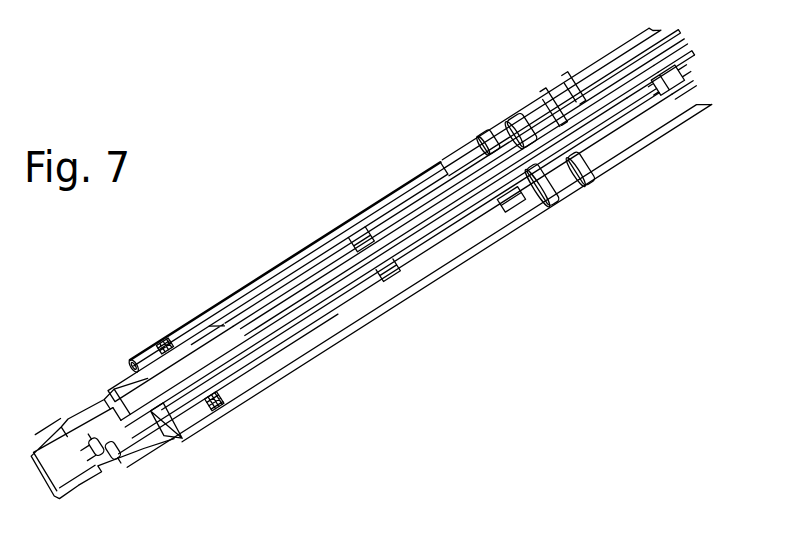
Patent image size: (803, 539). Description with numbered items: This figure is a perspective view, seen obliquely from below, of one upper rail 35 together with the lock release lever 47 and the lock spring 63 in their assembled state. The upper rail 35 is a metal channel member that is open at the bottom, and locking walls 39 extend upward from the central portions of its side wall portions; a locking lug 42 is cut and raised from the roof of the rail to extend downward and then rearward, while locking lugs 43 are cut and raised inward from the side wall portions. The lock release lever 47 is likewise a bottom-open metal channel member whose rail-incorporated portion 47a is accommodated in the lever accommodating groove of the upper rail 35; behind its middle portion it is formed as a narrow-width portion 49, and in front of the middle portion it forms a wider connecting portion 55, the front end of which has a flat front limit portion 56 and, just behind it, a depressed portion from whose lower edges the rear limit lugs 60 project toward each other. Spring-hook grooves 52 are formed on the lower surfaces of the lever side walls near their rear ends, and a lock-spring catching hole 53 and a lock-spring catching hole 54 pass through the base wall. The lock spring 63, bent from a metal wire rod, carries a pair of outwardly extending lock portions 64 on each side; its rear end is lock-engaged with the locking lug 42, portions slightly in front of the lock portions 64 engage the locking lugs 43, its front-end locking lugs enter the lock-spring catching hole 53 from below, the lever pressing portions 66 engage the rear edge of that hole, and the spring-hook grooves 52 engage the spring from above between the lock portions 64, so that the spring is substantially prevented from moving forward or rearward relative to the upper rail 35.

The upper rail 35 is at (322, 236).
The rail-incorporated portion 47a is at (440, 84).
The lock release lever 47 is at (212, 338).
The lever pressing portions 66 is at (277, 300).
The narrow-width portion 49 is at (448, 223).
The lock-spring catching hole 53 is at (240, 365).
The locking lugs 43 is at (363, 241).
The lock portions 64 is at (518, 105).
The spring-hook grooves 52 is at (510, 198).
The locking lug 42 is at (695, 67).
The lock spring 63 is at (648, 114).
The locking walls 39 is at (620, 157).
The lock-spring catching hole 54 is at (143, 438).
The rear limit lugs 60 is at (115, 453).
The front limit portion 56 is at (63, 468).
The connecting portion 55 is at (112, 365).